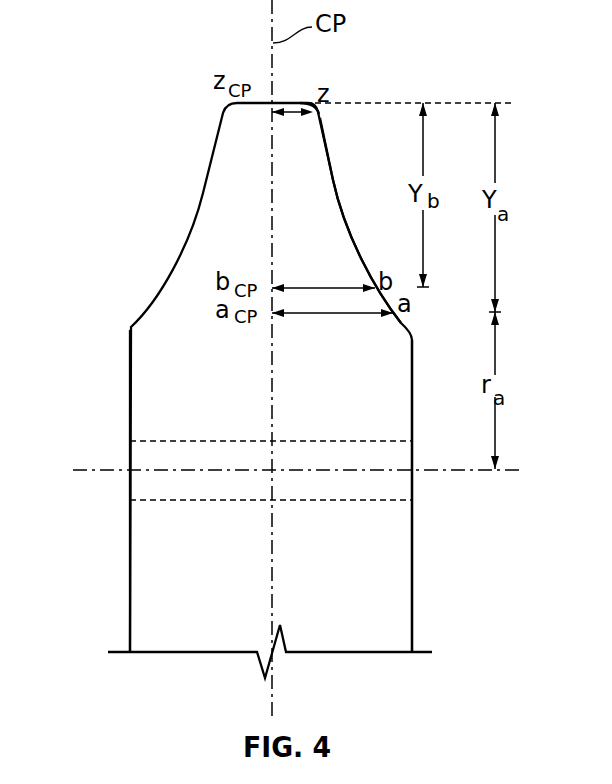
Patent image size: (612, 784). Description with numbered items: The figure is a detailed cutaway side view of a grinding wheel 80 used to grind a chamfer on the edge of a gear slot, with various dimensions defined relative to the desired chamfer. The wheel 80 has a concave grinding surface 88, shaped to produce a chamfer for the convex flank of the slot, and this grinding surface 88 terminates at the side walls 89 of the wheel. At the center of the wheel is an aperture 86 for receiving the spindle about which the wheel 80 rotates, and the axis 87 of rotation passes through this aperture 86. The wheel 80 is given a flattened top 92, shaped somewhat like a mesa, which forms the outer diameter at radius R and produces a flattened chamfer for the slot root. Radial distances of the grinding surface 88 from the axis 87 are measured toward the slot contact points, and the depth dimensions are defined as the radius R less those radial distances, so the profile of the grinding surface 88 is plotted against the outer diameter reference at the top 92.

The grinding wheel 80 is at (120, 114).
The flattened top 92 is at (287, 101).
The grinding surface 88 is at (337, 181).
The side walls 89 is at (128, 408).
The aperture 86 is at (398, 441).
The axis 87 is at (88, 471).